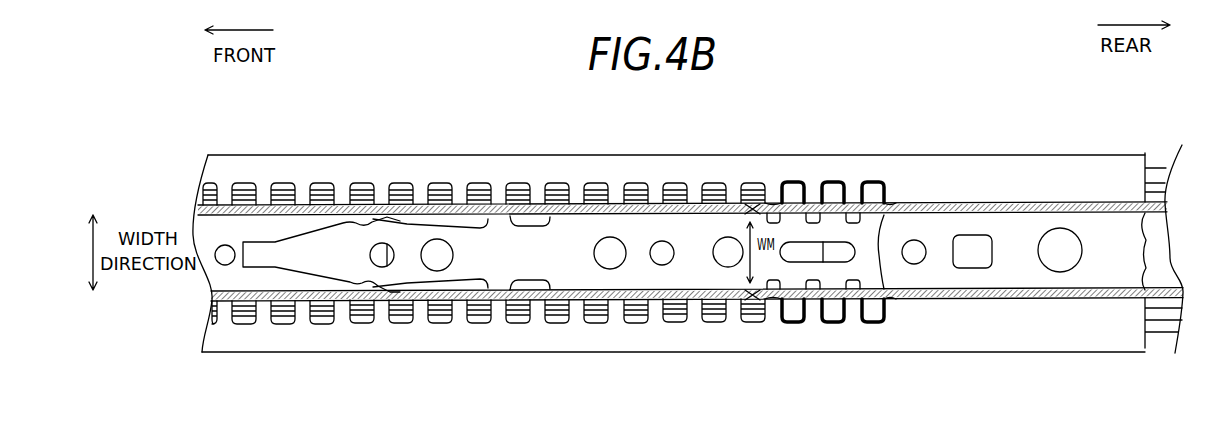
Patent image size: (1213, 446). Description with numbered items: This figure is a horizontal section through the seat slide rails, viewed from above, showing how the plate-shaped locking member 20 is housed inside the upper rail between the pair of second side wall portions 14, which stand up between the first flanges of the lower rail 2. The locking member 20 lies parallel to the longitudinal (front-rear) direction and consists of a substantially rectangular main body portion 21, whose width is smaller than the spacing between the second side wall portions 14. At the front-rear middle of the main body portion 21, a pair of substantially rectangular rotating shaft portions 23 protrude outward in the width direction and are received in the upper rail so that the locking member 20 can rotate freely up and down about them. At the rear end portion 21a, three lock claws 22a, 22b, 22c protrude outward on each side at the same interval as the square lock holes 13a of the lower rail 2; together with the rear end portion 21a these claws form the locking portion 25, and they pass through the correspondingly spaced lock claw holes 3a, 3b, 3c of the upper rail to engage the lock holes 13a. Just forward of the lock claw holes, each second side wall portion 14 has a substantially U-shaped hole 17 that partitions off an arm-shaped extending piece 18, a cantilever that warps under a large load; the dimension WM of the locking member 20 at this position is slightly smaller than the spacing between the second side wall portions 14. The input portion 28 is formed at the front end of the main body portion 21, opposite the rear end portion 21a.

The lower rail 2 is at (750, 5).
The lock claw hole 3a is at (798, 182).
The lock claw hole 3b is at (845, 182).
The lock claw hole 3c is at (885, 182).
The lock hole 13a is at (785, 183).
The second side wall portion 14 is at (420, 203).
The hole 17 is at (740, 298).
The extending piece 18 is at (745, 183).
The locking member 20 is at (528, 223).
The main body portion 21 is at (802, 206).
The rear end portion 21a is at (868, 265).
The lock claw 22a is at (797, 251).
The lock claw 22b is at (839, 240).
The lock claw 22c is at (887, 248).
The rotating shaft portion 23 is at (497, 203).
The locking portion 25 is at (868, 229).
The input portion 28 is at (307, 268).